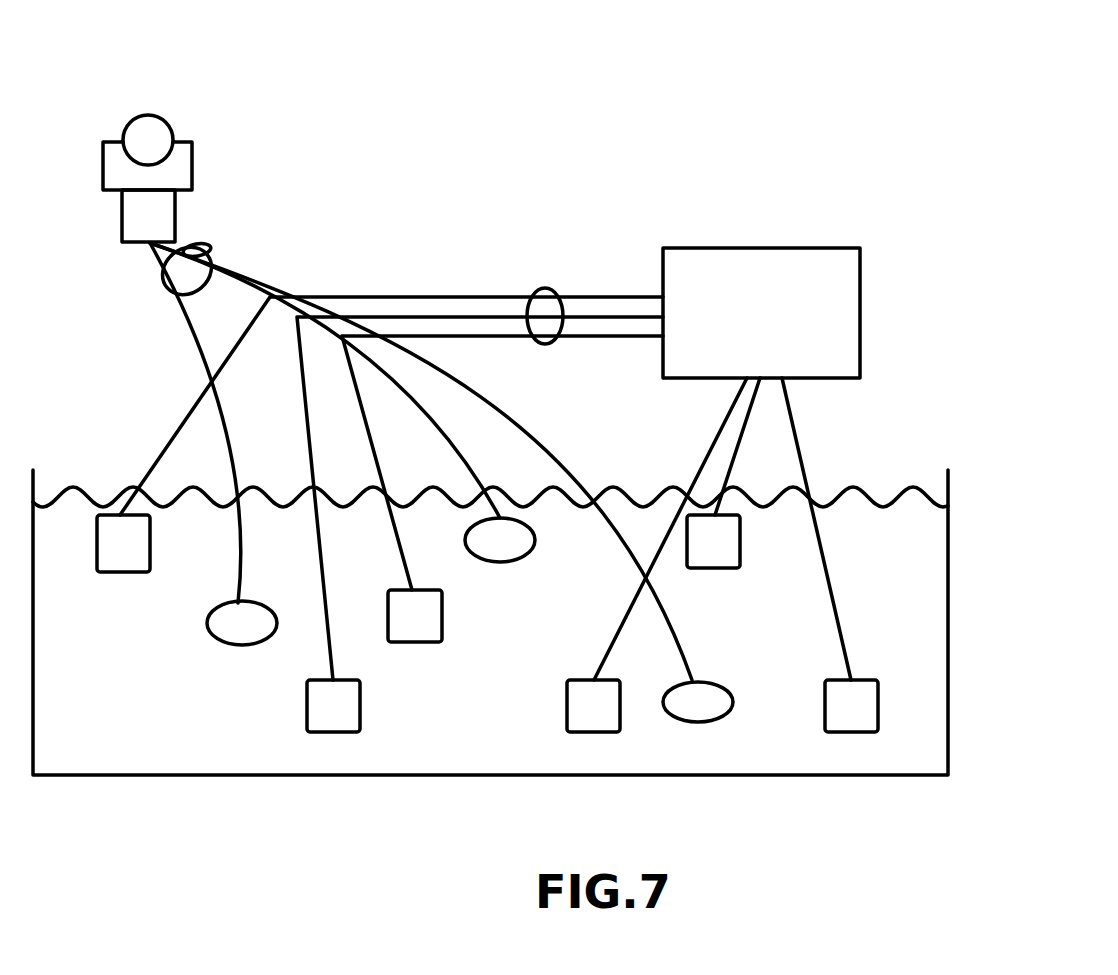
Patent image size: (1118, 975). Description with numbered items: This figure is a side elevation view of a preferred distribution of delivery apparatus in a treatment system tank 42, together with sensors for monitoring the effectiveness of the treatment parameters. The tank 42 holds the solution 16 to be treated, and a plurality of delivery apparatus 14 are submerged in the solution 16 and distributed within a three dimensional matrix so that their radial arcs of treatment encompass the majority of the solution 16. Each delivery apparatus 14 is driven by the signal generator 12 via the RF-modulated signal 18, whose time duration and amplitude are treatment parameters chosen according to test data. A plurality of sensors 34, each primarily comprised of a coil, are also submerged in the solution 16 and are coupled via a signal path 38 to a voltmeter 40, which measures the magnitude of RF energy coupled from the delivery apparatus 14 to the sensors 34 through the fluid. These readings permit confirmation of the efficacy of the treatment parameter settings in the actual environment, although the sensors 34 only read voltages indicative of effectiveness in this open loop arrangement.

The signal generator 12 is at (758, 247).
The delivery apparatus 14 is at (123, 572).
The solution 16 is at (932, 530).
The RF-modulated signal 18 is at (543, 290).
The sensor 34 is at (240, 645).
The signal path 38 is at (200, 242).
The voltmeter 40 is at (187, 143).
The treatment system tank 42 is at (950, 698).